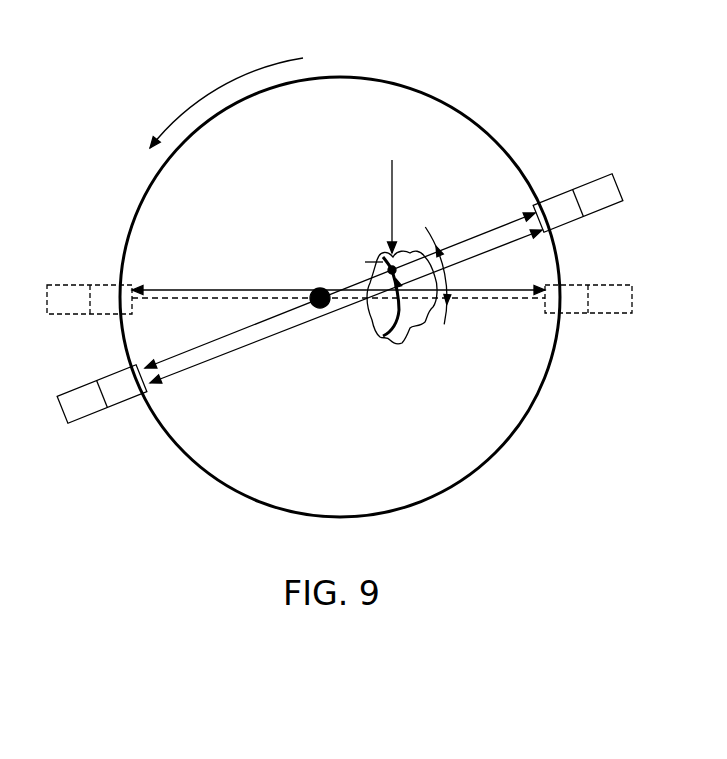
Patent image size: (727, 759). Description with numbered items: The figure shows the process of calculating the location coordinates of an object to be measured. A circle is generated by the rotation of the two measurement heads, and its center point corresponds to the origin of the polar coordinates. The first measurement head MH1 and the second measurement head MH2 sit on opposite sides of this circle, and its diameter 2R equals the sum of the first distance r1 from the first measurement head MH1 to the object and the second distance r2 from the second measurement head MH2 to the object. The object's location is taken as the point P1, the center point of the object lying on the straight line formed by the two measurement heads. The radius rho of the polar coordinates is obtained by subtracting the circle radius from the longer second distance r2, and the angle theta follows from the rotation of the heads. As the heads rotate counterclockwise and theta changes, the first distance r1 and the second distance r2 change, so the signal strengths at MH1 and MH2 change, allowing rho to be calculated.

The first measurement head MH1 is at (582, 244).
The second measurement head MH2 is at (92, 338).
The point P1 is at (393, 238).
The first distance r1 is at (340, 290).
The second distance r2 is at (346, 306).
The diameter of the circle 2R is at (338, 274).